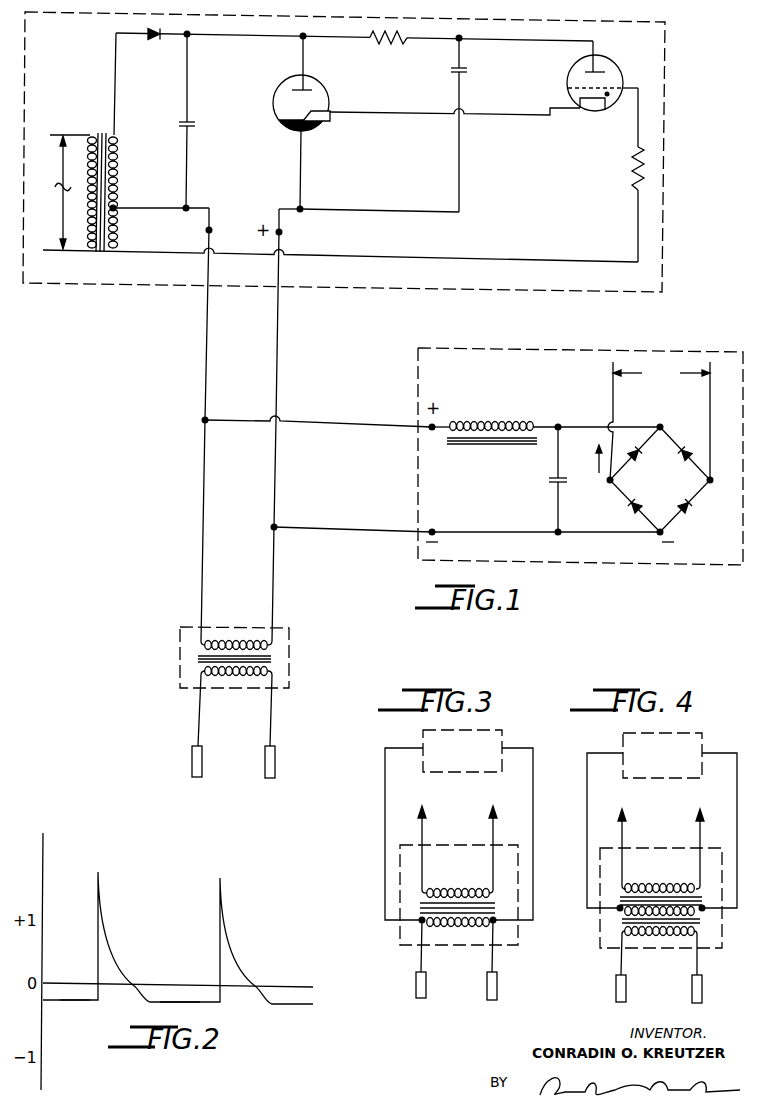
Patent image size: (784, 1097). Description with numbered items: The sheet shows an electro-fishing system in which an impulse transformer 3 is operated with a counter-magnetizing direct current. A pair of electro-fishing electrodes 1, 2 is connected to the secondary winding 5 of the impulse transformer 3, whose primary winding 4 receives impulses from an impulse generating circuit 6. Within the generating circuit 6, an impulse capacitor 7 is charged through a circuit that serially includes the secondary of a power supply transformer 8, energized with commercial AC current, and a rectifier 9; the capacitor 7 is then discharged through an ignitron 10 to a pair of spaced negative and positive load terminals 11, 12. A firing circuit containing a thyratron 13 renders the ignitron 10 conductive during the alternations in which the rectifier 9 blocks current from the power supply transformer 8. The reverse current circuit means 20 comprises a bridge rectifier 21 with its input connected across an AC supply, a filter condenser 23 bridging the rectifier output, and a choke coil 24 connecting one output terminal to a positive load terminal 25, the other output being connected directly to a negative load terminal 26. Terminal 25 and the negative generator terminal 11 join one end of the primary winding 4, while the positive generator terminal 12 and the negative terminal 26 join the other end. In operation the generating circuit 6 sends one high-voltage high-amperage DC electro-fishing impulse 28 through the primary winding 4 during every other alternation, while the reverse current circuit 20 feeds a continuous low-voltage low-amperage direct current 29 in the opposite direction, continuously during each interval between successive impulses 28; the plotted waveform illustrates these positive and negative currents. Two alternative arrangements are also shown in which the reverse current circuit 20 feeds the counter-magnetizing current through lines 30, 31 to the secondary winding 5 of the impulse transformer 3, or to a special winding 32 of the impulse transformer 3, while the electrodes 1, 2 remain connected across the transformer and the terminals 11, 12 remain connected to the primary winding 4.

In FIG. 1, the electro-fishing electrode 1 is at (191, 762).
In FIG. 3, the electro-fishing electrode 1 is at (416, 986).
In FIG. 4, the electro-fishing electrode 1 is at (616, 990).
In FIG. 1, the electro-fishing electrode 2 is at (276, 763).
In FIG. 3, the electro-fishing electrode 2 is at (487, 988).
In FIG. 4, the electro-fishing electrode 2 is at (692, 992).
In FIG. 1, the impulse transformer 3 is at (290, 640).
In FIG. 3, the impulse transformer 3 is at (495, 945).
In FIG. 4, the impulse transformer 3 is at (710, 948).
In FIG. 1, the primary winding 4 is at (236, 643).
In FIG. 3, the primary winding 4 is at (448, 892).
In FIG. 4, the primary winding 4 is at (650, 888).
In FIG. 1, the secondary winding 5 is at (238, 674).
In FIG. 3, the secondary winding 5 is at (470, 926).
In FIG. 4, the secondary winding 5 is at (674, 935).
In FIG. 1, the impulse generating circuit 6 is at (667, 98).
In FIG. 1, the impulse capacitor 7 is at (196, 124).
In FIG. 1, the power supply transformer 8 is at (105, 132).
In FIG. 1, the rectifier 9 is at (155, 40).
In FIG. 1, the ignitron 10 is at (320, 80).
In FIG. 1, the negative load terminal 11 is at (206, 230).
In FIG. 3, the negative load terminal 11 is at (425, 839).
In FIG. 4, the negative load terminal 11 is at (625, 838).
In FIG. 1, the positive load terminal 12 is at (282, 232).
In FIG. 3, the positive load terminal 12 is at (496, 839).
In FIG. 4, the positive load terminal 12 is at (703, 838).
In FIG. 1, the thyratron 13 is at (612, 66).
In FIG. 1, the reverse current circuit means 20 is at (670, 565).
In FIG. 3, the reverse current circuit means 20 is at (474, 762).
In FIG. 4, the reverse current circuit means 20 is at (674, 764).
In FIG. 1, the bridge rectifier 21 is at (666, 491).
In FIG. 1, the filter condenser 23 is at (550, 479).
In FIG. 1, the choke coil 24 is at (492, 422).
In FIG. 1, the positive load terminal 25 is at (433, 431).
In FIG. 1, the negative load terminal 26 is at (434, 529).
In FIG. 2, the electro-fishing impulse 28 is at (108, 932).
In FIG. 2, the counter-magnetizing direct current 29 is at (78, 1003).
In FIG. 3, the line 30 is at (385, 828).
In FIG. 4, the line 30 is at (587, 832).
In FIG. 3, the line 31 is at (533, 864).
In FIG. 4, the line 31 is at (737, 836).
In FIG. 4, the special winding 32 is at (627, 914).